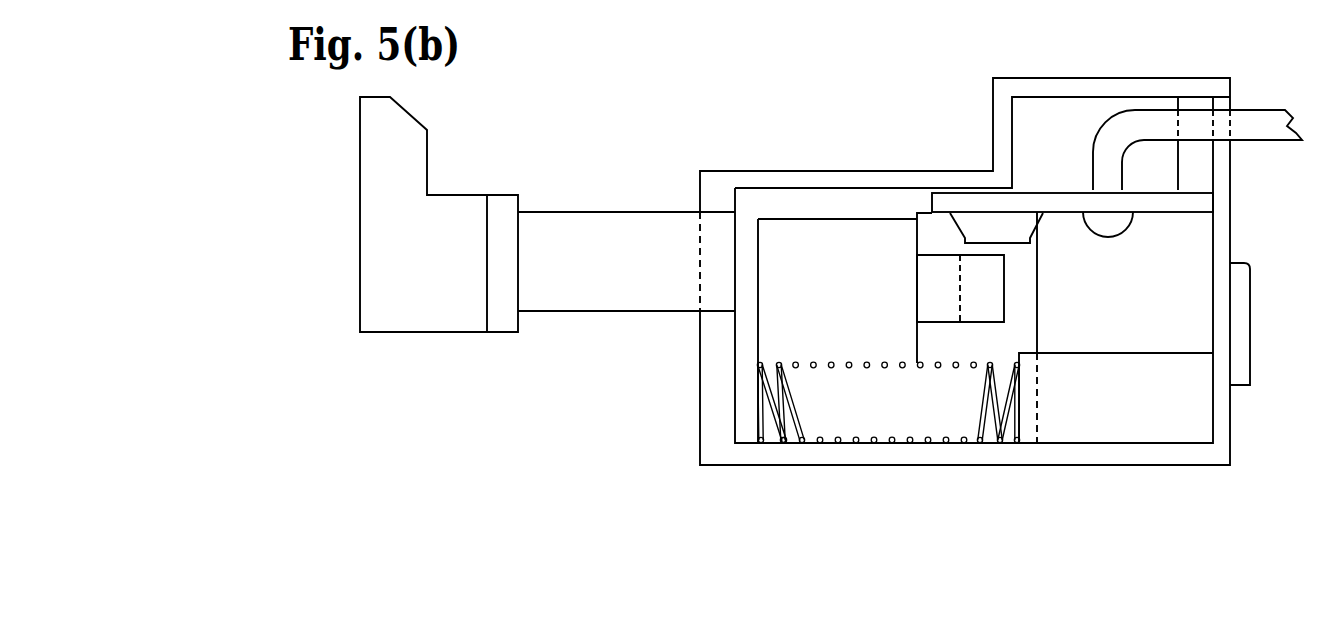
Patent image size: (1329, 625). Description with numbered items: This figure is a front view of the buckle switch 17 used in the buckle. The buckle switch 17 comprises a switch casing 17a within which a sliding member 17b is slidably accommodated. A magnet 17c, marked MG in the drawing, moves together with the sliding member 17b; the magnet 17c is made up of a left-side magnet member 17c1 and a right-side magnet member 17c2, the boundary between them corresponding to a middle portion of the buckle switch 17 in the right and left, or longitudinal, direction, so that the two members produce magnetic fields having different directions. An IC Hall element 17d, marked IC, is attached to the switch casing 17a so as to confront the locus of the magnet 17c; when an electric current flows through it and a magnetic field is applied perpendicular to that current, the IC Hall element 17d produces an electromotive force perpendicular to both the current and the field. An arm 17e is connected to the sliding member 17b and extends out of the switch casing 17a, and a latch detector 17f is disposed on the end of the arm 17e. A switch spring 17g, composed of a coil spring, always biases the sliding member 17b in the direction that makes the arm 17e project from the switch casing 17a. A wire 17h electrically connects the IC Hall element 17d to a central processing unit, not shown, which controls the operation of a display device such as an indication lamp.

The buckle switch 17 is at (608, 398).
The switch casing 17a is at (846, 182).
The sliding member 17b is at (1032, 289).
The magnet 17c is at (1012, 308).
The left-side magnet member 17c1 is at (951, 314).
The right-side magnet member 17c2 is at (993, 275).
The IC Hall element 17d is at (975, 218).
The arm 17e is at (601, 229).
The latch detector 17f is at (374, 234).
The switch spring 17g is at (798, 415).
The wire 17h is at (1128, 127).